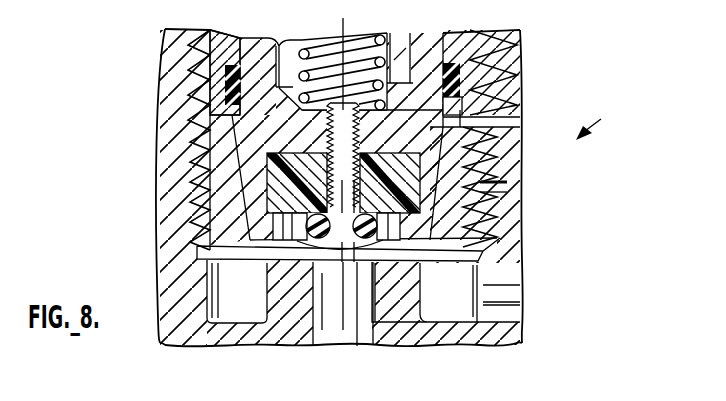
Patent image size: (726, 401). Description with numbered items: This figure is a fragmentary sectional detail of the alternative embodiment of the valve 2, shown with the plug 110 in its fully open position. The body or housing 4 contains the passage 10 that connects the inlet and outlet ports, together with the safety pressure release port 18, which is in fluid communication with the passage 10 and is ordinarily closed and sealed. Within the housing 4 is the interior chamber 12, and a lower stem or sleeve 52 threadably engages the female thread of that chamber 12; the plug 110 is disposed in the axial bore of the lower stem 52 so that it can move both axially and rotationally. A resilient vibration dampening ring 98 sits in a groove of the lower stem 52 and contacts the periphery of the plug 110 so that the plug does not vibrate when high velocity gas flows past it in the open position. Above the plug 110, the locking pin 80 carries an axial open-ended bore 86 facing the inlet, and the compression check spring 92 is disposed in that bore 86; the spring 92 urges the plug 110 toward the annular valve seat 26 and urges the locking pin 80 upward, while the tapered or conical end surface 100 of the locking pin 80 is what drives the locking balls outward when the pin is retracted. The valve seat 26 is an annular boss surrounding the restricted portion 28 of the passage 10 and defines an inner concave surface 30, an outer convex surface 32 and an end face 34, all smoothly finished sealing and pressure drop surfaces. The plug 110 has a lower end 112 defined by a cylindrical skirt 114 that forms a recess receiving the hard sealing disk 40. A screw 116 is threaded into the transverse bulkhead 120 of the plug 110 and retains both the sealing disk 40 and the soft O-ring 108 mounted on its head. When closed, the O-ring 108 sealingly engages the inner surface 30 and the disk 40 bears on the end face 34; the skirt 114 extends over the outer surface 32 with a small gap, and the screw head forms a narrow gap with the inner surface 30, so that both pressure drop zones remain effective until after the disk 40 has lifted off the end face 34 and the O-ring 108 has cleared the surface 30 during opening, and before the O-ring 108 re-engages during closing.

The valve 2 is at (594, 124).
The body or housing 4 is at (506, 105).
The passage 10 is at (507, 183).
The interior chamber 12 is at (175, 118).
The safety pressure release port 18 is at (357, 346).
The annular valve seat 26 is at (292, 338).
The restricted portion of the passage 28 is at (332, 332).
The inner concave surface 30 is at (324, 336).
The outer convex surface 32 is at (262, 318).
The end face 34 is at (285, 262).
The hard sealing disk 40 is at (497, 198).
The lower stem or sleeve 52 is at (220, 54).
The locking pin 80 is at (288, 44).
The axial open-ended bore 86 is at (304, 35).
The compression check spring 92 is at (388, 33).
The vibration dampening ring 98 is at (162, 95).
The tapered or conical end surface 100 is at (272, 40).
The soft O-ring 108 is at (497, 238).
The plug 110 is at (463, 30).
The lower end 112 is at (162, 173).
The cylindrical skirt 114 is at (195, 208).
The screw 116 is at (515, 127).
The transverse bulkhead 120 is at (205, 142).